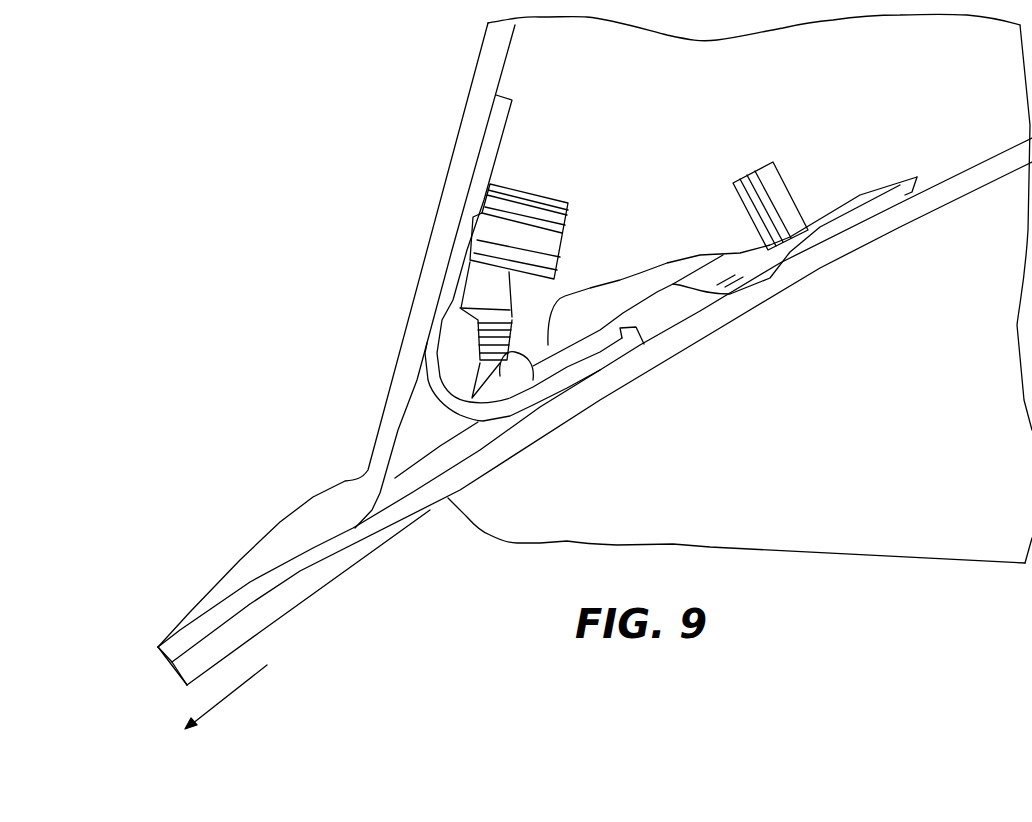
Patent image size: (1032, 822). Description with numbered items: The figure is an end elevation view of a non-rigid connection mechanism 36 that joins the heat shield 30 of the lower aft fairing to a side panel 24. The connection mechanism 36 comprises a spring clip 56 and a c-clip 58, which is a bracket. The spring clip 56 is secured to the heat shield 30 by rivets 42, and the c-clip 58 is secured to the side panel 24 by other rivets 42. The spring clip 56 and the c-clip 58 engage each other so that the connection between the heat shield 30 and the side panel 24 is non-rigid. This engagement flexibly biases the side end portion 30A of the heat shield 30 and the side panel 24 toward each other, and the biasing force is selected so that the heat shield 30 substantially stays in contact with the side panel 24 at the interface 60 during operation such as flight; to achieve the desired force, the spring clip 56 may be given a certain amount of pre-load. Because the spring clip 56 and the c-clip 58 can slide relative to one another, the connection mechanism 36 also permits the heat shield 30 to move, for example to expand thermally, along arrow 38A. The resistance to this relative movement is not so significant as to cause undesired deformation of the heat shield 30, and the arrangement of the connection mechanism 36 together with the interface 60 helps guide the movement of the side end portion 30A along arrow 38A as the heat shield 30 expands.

The side panel 24 is at (408, 338).
The heat shield 30 is at (728, 307).
The side end portion 30A is at (758, 549).
The non-rigid connection mechanism 36 is at (403, 68).
The arrow 38A is at (223, 698).
The rivet 42 is at (522, 238).
The spring clip 56 is at (676, 272).
The c-clip 58 is at (450, 210).
The interface 60 is at (157, 679).